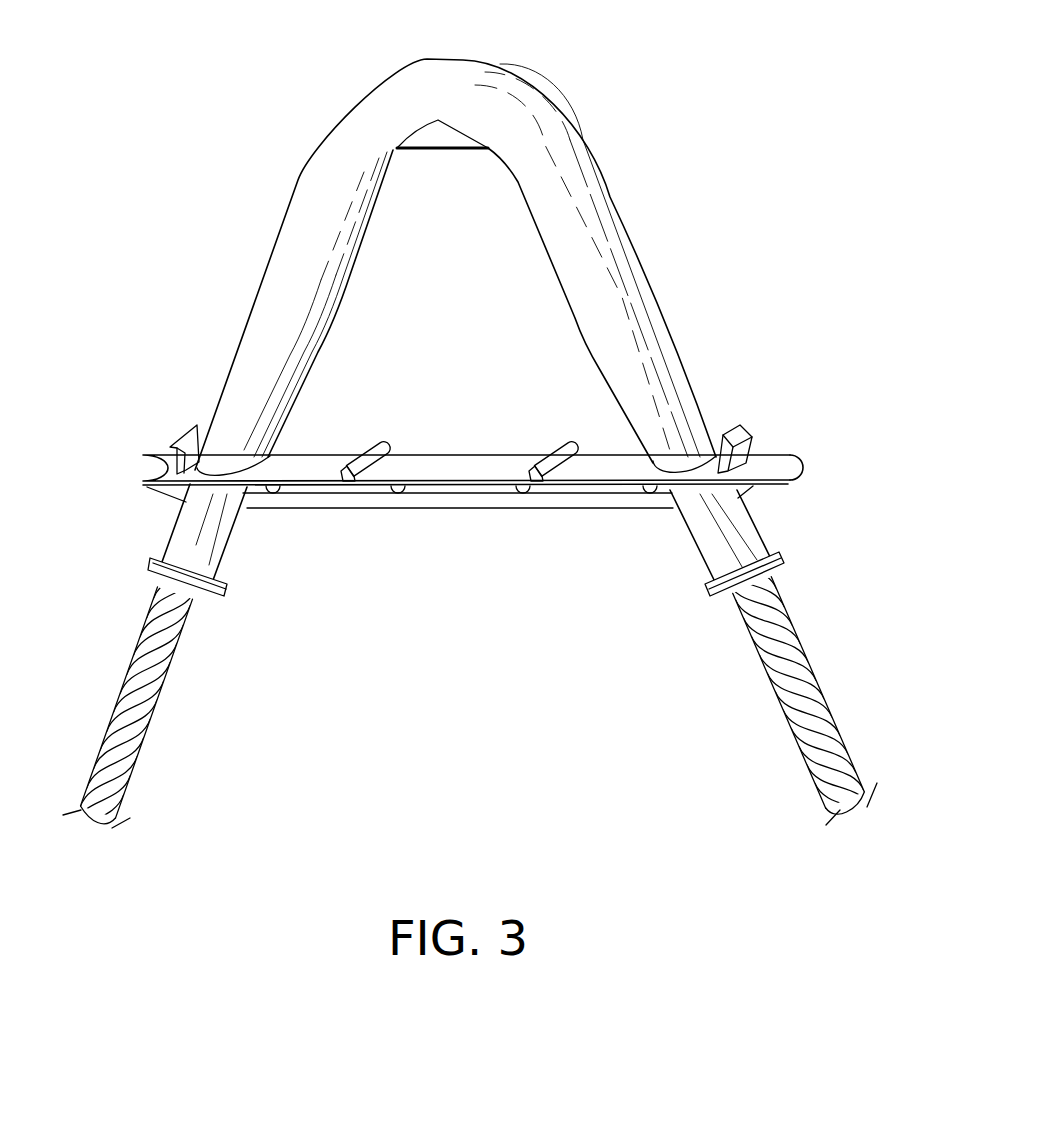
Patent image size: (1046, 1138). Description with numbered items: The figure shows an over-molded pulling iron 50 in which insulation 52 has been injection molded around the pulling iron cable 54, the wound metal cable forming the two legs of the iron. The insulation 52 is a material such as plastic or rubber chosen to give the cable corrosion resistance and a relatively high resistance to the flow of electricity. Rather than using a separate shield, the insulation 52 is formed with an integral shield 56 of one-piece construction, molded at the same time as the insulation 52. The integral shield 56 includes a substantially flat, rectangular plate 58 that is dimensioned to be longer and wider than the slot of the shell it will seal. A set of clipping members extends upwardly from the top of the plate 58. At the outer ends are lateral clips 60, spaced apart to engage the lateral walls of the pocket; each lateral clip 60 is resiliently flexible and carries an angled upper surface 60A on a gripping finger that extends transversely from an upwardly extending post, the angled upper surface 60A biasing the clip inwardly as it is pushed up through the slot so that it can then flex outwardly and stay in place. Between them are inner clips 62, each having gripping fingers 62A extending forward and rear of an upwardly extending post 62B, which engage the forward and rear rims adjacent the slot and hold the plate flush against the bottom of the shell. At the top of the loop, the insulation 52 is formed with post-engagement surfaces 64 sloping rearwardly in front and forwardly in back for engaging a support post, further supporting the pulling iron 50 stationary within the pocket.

The over-molded pulling iron 50 is at (730, 120).
The insulation 52 is at (650, 283).
The pulling iron cable 54 is at (798, 638).
The integral shield 56 is at (458, 468).
The plate 58 is at (793, 458).
The lateral clips 60 is at (197, 427).
The angled upper surface 60A is at (733, 430).
The inner clips 62 is at (382, 443).
The gripping fingers 62A is at (563, 458).
The upwardly extending post 62B is at (580, 462).
The post-engagement surfaces 64 is at (437, 135).